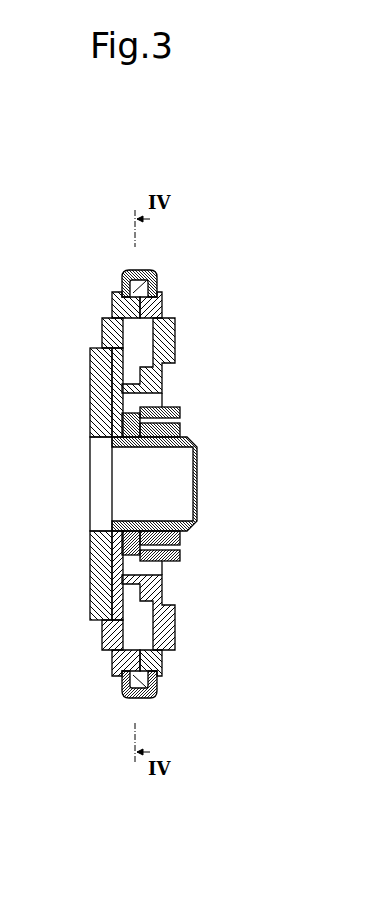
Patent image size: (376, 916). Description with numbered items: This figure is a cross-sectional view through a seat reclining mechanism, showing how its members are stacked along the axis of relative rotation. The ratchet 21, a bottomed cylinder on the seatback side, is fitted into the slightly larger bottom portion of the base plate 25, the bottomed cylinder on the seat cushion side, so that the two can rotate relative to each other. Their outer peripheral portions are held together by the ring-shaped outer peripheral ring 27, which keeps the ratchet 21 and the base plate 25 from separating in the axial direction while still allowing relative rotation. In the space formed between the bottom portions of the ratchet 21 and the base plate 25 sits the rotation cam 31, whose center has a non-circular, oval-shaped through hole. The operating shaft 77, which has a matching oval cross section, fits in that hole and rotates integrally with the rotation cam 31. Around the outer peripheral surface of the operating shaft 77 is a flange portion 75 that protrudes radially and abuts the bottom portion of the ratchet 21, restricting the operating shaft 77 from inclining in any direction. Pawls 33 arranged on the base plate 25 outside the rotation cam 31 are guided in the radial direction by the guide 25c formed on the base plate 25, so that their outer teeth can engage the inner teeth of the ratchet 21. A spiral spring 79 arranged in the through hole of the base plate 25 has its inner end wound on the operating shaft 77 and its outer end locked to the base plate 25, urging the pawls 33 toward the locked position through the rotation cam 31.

The ratchet 21 is at (94, 412).
The base plate 25 is at (172, 322).
The guide 25c is at (100, 371).
The outer peripheral ring 27 is at (152, 272).
The rotation cam 31 is at (113, 528).
The pawls 33 is at (103, 632).
The flange portion 75 is at (94, 548).
The operating shaft 77 is at (198, 455).
The spiral spring 79 is at (180, 408).